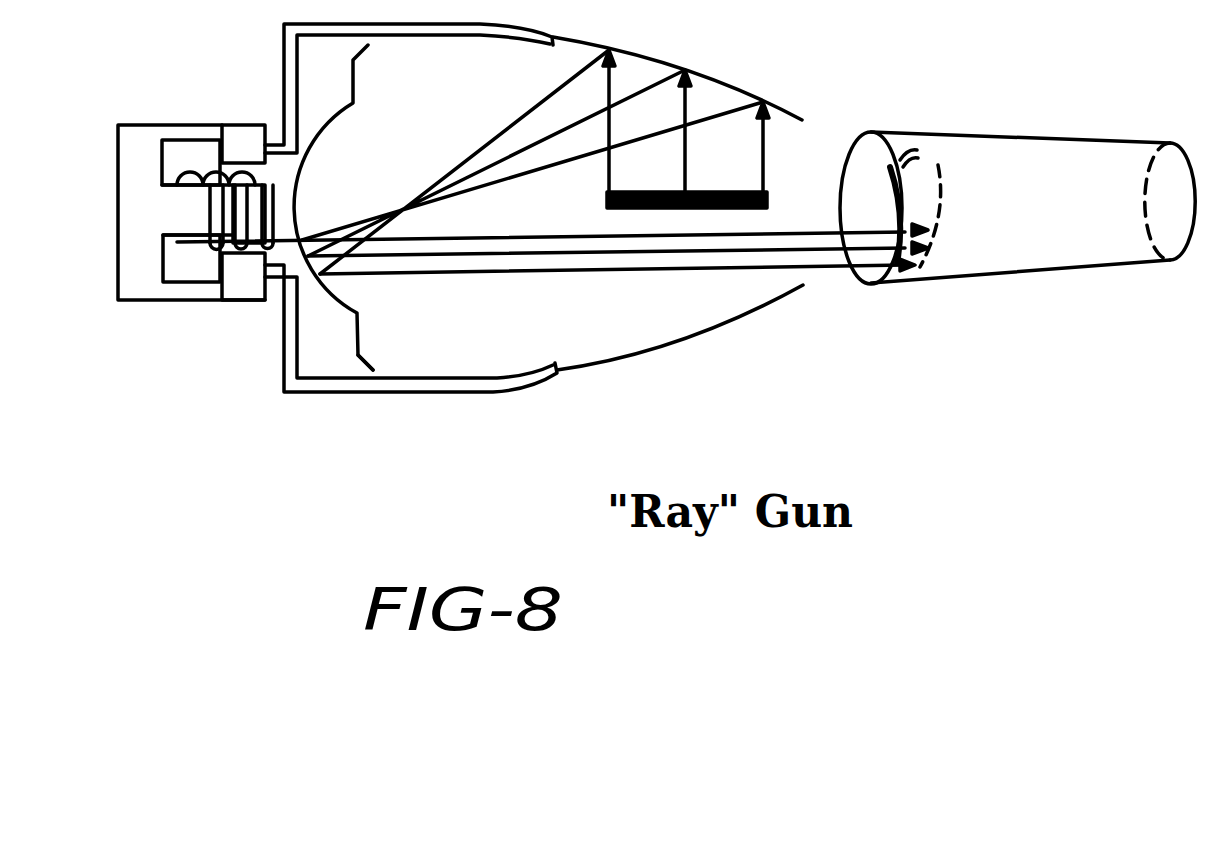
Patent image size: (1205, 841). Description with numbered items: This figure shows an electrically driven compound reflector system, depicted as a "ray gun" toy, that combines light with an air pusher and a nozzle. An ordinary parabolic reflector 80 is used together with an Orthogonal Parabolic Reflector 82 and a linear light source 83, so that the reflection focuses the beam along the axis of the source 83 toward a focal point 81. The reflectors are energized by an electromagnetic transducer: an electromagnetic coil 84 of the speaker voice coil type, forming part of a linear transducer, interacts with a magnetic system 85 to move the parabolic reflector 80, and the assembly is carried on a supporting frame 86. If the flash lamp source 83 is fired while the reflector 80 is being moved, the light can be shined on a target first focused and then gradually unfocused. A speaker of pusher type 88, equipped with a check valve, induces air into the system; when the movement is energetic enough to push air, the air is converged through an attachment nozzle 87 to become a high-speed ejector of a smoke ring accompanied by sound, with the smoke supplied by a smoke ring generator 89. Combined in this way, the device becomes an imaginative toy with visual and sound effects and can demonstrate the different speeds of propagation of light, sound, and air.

The parabolic reflector 80 is at (324, 290).
The focal point 81 is at (552, 162).
The Orthogonal Parabolic Reflector 82 is at (703, 333).
The light source 83 is at (692, 192).
The electromagnetic coil 84 is at (217, 252).
The magnetic system 85 is at (133, 302).
The supporting frame 86 is at (417, 392).
The attachment nozzle 87 is at (992, 277).
The speaker of pusher type 88 is at (373, 370).
The smoke ring generator 89 is at (938, 165).